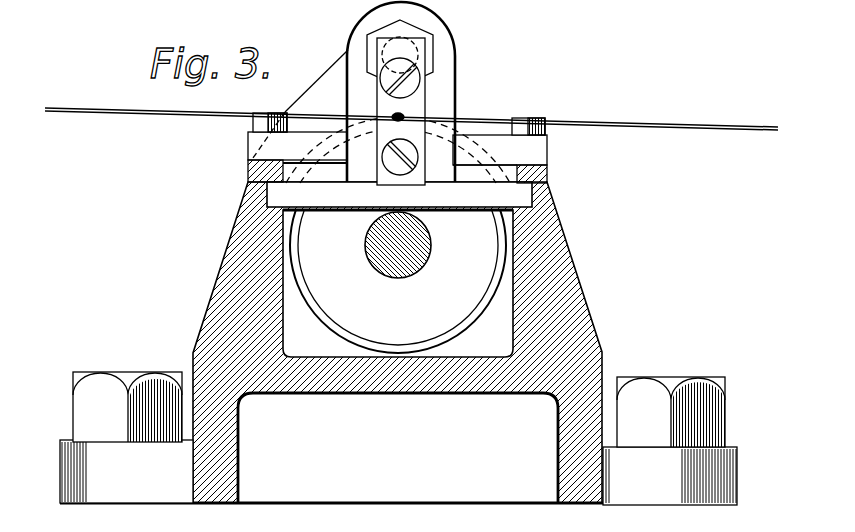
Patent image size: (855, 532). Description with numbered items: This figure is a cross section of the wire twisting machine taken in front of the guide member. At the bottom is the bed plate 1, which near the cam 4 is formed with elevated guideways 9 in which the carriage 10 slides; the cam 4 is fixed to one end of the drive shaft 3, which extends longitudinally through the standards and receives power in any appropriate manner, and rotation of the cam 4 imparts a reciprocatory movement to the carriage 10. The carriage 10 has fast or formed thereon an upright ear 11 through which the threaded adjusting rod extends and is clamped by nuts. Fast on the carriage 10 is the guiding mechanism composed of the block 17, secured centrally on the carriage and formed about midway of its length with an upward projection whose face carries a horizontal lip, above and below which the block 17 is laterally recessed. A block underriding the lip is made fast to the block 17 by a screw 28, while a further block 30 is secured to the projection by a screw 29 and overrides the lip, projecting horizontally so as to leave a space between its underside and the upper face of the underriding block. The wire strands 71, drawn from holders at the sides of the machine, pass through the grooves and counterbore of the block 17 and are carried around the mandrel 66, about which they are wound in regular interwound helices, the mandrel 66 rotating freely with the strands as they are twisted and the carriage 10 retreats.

The bed plate 1 is at (398, 343).
The drive shaft 3 is at (394, 278).
The cam 4 is at (438, 287).
The guideways 9 is at (245, 185).
The carriage 10 is at (397, 161).
The upright ear 11 is at (362, 20).
The block 17 is at (422, 190).
The screw 28 is at (398, 245).
The screw 29 is at (403, 58).
The block 30 is at (395, 98).
The mandrel 66 is at (407, 112).
The wire strands 71 is at (660, 129).